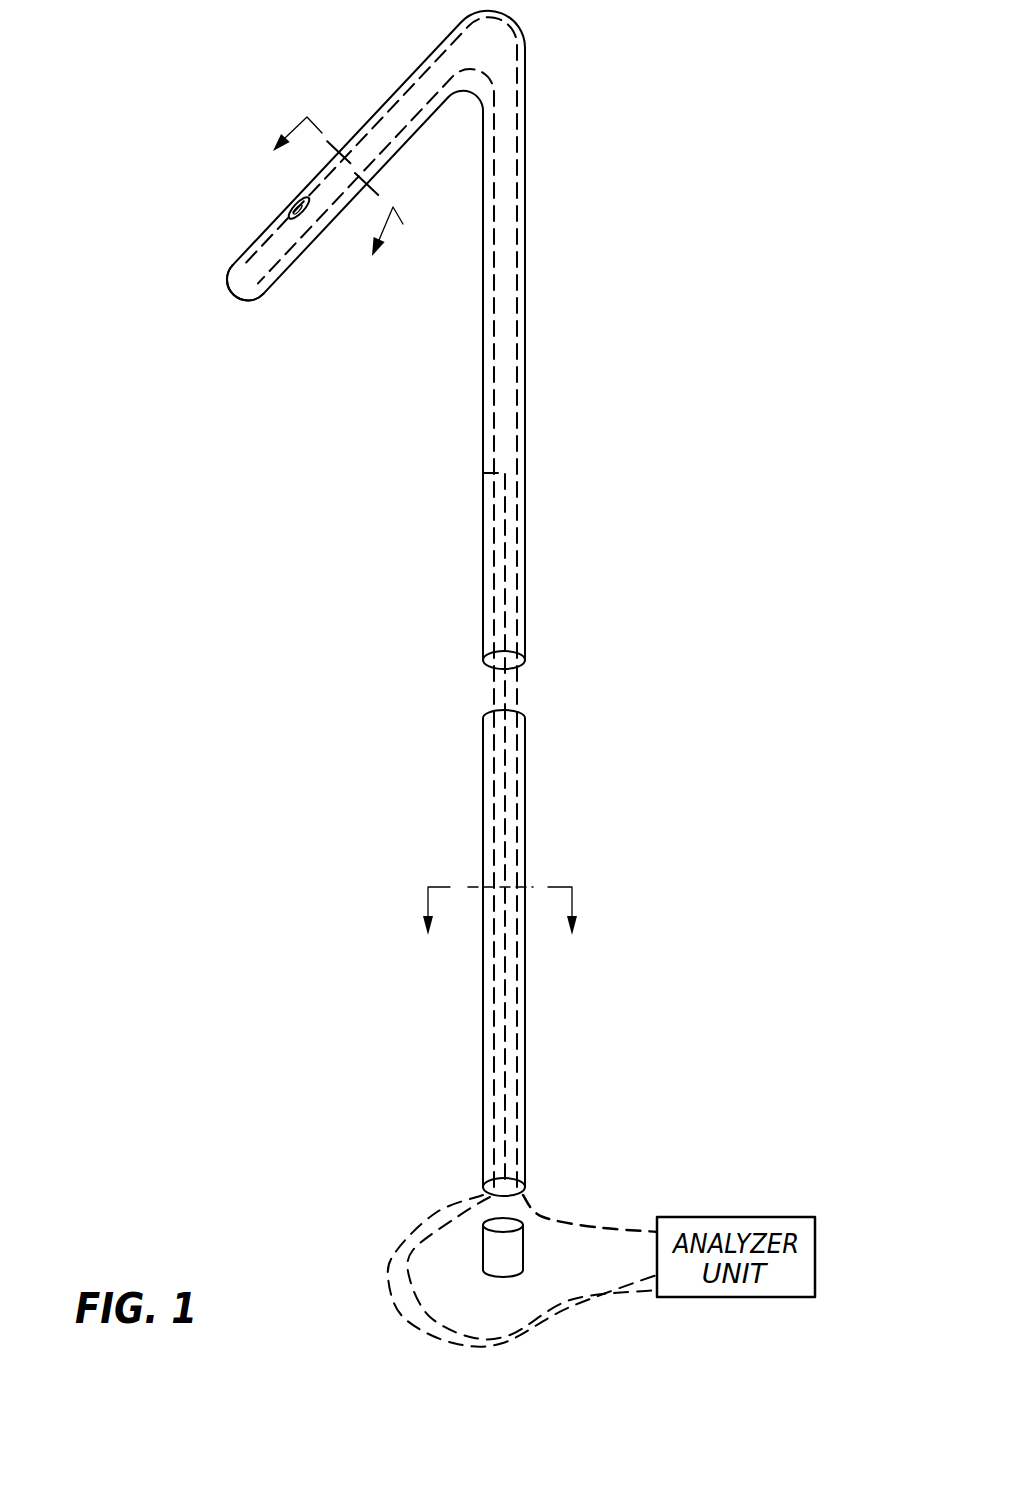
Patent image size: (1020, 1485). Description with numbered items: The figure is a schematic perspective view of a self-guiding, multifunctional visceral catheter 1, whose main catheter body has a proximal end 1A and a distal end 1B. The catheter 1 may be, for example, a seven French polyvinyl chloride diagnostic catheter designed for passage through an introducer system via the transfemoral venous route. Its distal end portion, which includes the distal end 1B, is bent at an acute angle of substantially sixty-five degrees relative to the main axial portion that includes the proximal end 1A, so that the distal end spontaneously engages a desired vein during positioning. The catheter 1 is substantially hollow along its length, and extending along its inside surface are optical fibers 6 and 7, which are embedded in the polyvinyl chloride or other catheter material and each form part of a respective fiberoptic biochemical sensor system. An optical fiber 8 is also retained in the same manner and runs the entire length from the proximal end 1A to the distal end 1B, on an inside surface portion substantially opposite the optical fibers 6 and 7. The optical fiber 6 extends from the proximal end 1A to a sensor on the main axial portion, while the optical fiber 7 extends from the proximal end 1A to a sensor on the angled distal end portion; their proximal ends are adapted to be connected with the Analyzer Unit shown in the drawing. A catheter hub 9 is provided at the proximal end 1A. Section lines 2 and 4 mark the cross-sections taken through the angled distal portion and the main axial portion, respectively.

The multifunctional visceral catheter 1 is at (655, 252).
The proximal end 1A is at (620, 1123).
The distal end 1B is at (212, 279).
The section line 2- 2 is at (323, 203).
The section line 4- 4 is at (497, 933).
The optical fiber 6 is at (505, 567).
The optical fiber 7 is at (495, 335).
The optical fiber 8 is at (518, 383).
The catheter hub 9 is at (503, 1248).